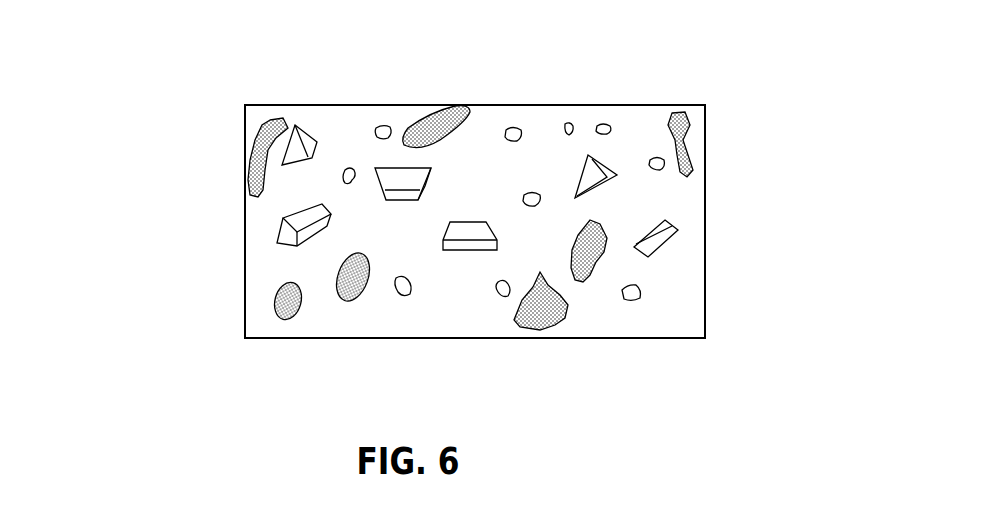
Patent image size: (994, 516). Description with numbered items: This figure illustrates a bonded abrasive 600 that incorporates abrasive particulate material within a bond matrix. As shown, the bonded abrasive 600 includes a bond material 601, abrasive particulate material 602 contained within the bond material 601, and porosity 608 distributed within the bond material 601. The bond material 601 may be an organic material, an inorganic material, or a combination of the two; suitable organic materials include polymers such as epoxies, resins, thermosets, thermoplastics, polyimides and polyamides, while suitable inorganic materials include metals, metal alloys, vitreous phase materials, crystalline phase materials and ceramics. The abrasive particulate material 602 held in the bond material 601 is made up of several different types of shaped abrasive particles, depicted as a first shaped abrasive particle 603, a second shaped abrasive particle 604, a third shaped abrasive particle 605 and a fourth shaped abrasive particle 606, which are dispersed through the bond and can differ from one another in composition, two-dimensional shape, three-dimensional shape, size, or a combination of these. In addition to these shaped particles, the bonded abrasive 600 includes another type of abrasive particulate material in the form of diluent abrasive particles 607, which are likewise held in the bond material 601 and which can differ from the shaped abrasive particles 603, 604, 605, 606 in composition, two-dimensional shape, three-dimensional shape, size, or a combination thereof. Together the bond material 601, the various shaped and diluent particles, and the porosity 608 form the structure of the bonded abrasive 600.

The bonded abrasive 600 is at (150, 58).
The bond material 601 is at (687, 197).
The abrasive particulate material 602 is at (317, 193).
The shaped abrasive particle 603 is at (297, 133).
The shaped abrasive particle 604 is at (278, 233).
The shaped abrasive particle 605 is at (463, 237).
The shaped abrasive particle 606 is at (460, 150).
The diluent abrasive particles 607 is at (568, 122).
The porosity 608 is at (592, 257).